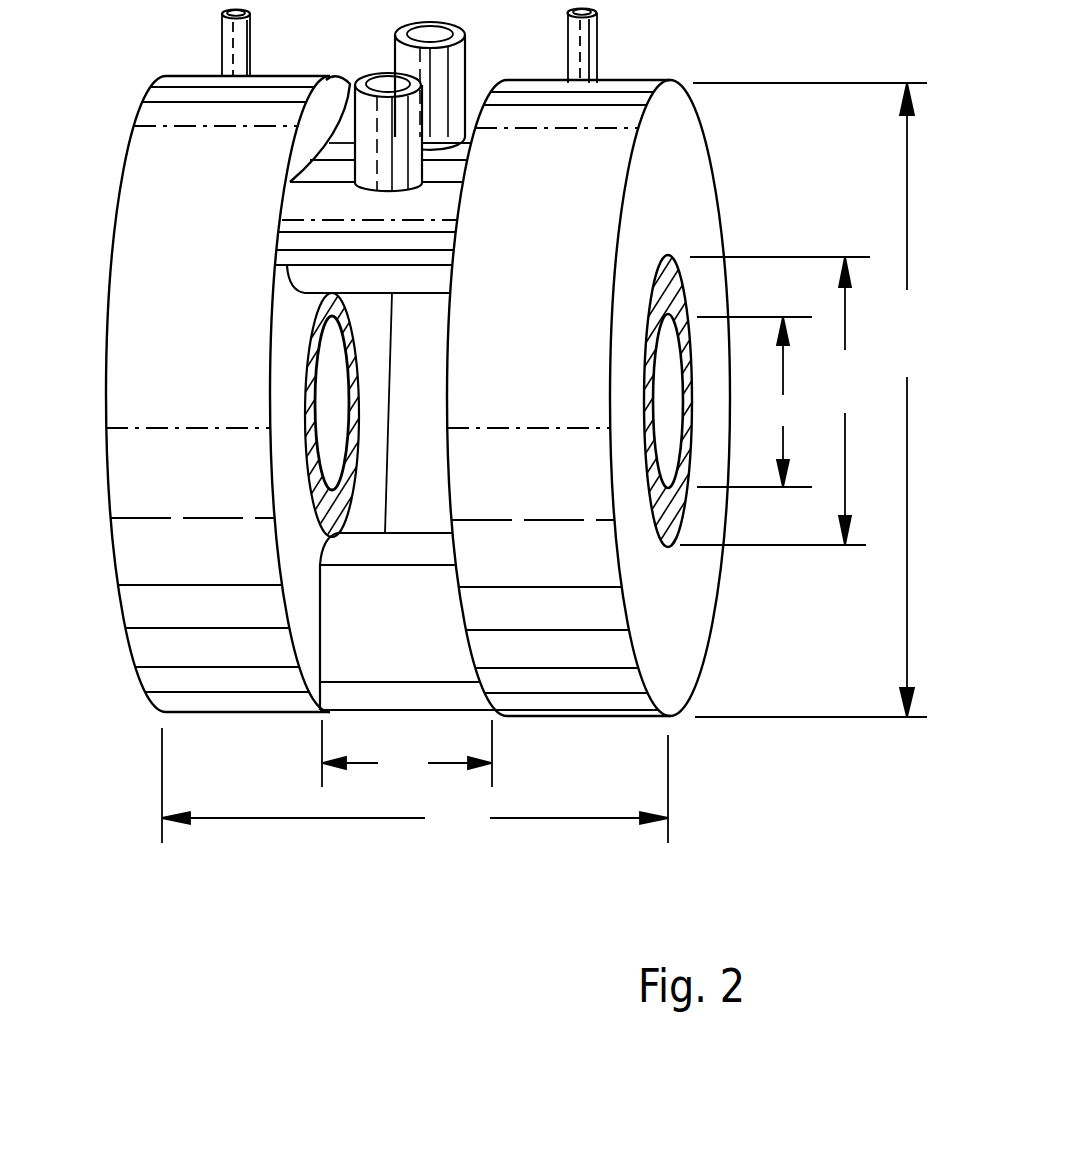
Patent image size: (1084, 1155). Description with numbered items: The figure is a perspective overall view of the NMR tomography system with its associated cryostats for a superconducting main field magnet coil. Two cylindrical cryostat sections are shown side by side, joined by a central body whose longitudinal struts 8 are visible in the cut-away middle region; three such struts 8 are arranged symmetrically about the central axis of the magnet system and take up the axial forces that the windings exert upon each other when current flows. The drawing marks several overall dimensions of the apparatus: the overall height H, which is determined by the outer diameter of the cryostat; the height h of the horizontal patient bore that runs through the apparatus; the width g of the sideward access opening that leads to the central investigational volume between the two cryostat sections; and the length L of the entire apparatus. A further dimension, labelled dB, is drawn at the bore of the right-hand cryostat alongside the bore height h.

The struts 8 is at (290, 243).
The overall height H is at (810, 400).
The bore diameter dimension dB is at (775, 401).
The height of the horizontal patient bore h is at (754, 402).
The width of the sideward access opening g is at (407, 753).
The length of the entire apparatus L is at (415, 785).